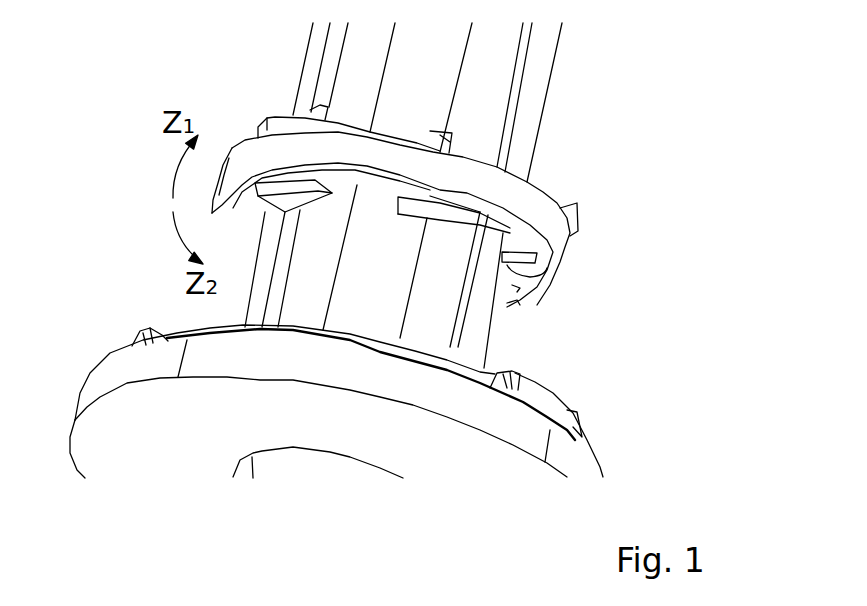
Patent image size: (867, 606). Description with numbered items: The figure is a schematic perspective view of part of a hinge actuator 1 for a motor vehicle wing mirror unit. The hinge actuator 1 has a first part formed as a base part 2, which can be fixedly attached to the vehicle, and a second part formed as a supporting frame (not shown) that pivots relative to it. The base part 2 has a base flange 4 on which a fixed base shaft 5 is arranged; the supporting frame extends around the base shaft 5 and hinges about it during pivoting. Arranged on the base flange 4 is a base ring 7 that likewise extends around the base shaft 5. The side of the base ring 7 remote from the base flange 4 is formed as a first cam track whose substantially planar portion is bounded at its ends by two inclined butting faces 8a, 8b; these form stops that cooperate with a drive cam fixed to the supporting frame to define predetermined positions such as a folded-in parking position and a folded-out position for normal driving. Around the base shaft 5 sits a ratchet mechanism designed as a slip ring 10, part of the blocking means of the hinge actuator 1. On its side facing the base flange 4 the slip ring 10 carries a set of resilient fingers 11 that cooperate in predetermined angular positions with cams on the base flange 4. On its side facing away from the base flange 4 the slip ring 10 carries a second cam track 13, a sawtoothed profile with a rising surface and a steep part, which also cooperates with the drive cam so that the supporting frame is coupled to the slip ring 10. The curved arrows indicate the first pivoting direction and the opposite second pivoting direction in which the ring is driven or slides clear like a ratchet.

The hinge actuator 1 is at (652, 183).
The base part 2 is at (652, 422).
The base flange 4 is at (583, 470).
The base shaft 5 is at (528, 90).
The base ring 7 is at (543, 402).
The inclined butting face 8a is at (151, 325).
The inclined butting face 8b is at (580, 358).
The slip ring 10 is at (560, 233).
The resilient fingers 11 is at (523, 267).
The second cam track 13 is at (472, 155).